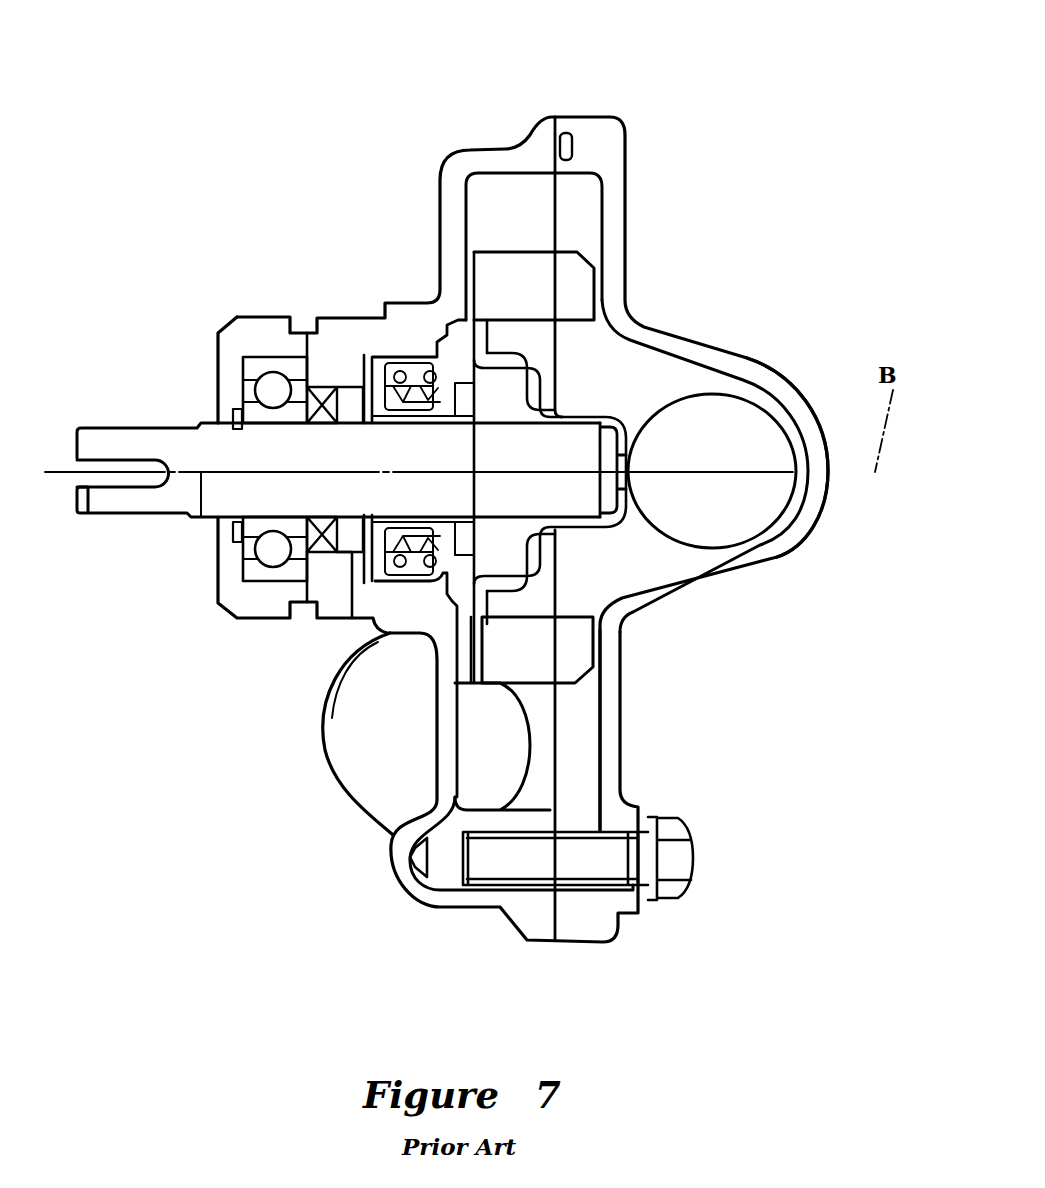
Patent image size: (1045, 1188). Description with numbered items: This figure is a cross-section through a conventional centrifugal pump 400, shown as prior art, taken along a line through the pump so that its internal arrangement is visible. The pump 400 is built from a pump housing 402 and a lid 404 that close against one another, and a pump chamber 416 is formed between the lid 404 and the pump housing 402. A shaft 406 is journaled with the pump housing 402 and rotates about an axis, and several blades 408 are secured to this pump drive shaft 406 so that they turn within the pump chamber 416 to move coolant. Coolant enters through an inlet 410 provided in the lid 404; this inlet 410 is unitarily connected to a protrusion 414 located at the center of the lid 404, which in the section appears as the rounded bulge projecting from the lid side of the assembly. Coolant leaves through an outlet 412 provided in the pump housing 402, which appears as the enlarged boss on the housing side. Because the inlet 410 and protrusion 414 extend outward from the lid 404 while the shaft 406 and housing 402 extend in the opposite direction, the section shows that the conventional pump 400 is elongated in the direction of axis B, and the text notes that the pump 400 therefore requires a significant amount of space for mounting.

The centrifugal pump 400 is at (583, 81).
The pump housing 402 is at (438, 215).
The lid 404 is at (627, 233).
The shaft 406 is at (147, 447).
The blades 408 is at (567, 650).
The inlet 410 is at (733, 418).
The outlet 412 is at (367, 780).
The protrusion 414 is at (775, 558).
The pump chamber 416 is at (600, 363).